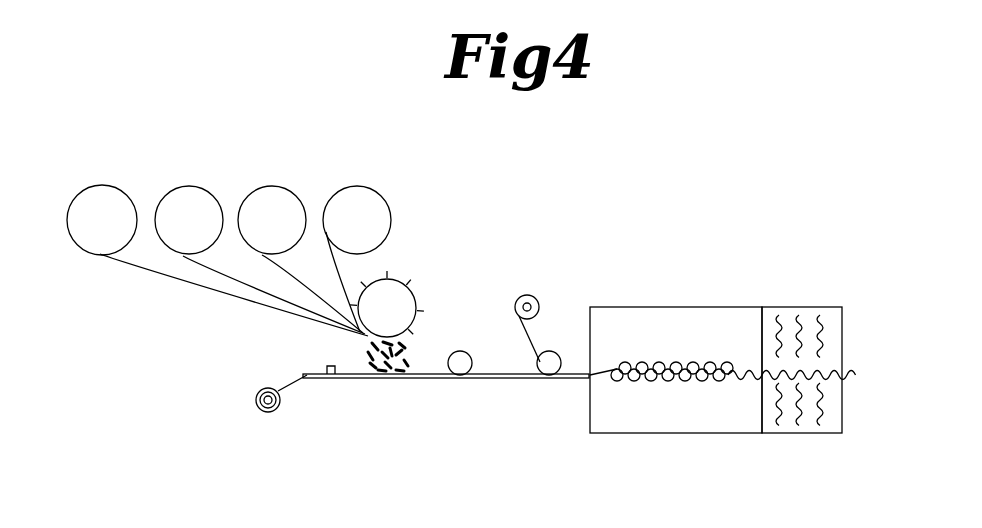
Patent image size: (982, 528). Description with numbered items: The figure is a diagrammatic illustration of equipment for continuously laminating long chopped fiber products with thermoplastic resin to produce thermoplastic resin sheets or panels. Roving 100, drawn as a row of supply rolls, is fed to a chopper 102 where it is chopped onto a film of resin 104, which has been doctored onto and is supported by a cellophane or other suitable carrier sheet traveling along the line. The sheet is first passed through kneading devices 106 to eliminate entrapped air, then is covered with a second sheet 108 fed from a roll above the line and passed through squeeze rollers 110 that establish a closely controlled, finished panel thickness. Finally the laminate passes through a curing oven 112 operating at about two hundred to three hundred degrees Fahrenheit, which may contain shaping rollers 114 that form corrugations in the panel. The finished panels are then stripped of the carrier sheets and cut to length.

The roving 100 is at (92, 257).
The chopper 102 is at (415, 279).
The film of resin 104 is at (268, 413).
The kneading devices 106 is at (461, 378).
The second sheet 108 is at (527, 292).
The squeeze rollers 110 is at (549, 378).
The curing oven 112 is at (800, 305).
The shaping rollers 114 is at (699, 305).